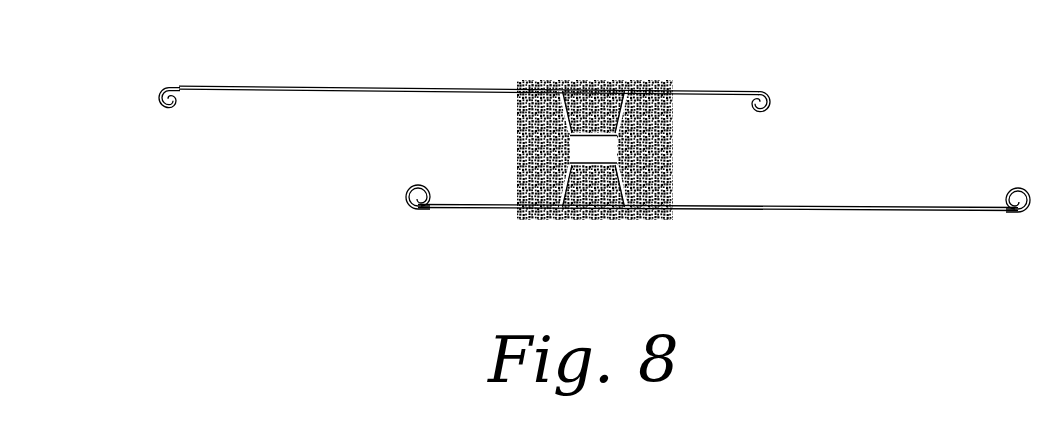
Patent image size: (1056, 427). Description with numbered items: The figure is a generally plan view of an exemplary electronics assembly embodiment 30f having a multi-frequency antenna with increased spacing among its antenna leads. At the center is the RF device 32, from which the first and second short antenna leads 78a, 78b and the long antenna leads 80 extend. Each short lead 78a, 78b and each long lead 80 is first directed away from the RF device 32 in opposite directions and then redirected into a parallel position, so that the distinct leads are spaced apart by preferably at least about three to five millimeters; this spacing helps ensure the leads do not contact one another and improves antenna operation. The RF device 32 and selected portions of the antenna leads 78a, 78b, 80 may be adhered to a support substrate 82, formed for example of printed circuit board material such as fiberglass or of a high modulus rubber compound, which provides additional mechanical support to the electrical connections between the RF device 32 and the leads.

The electronics assembly embodiment 30f is at (897, 69).
The RF device 32 is at (620, 146).
The first short antenna lead 78a is at (718, 90).
The second short antenna lead 78b is at (489, 209).
The long antenna leads 80 is at (284, 90).
The support substrate 82 is at (600, 221).